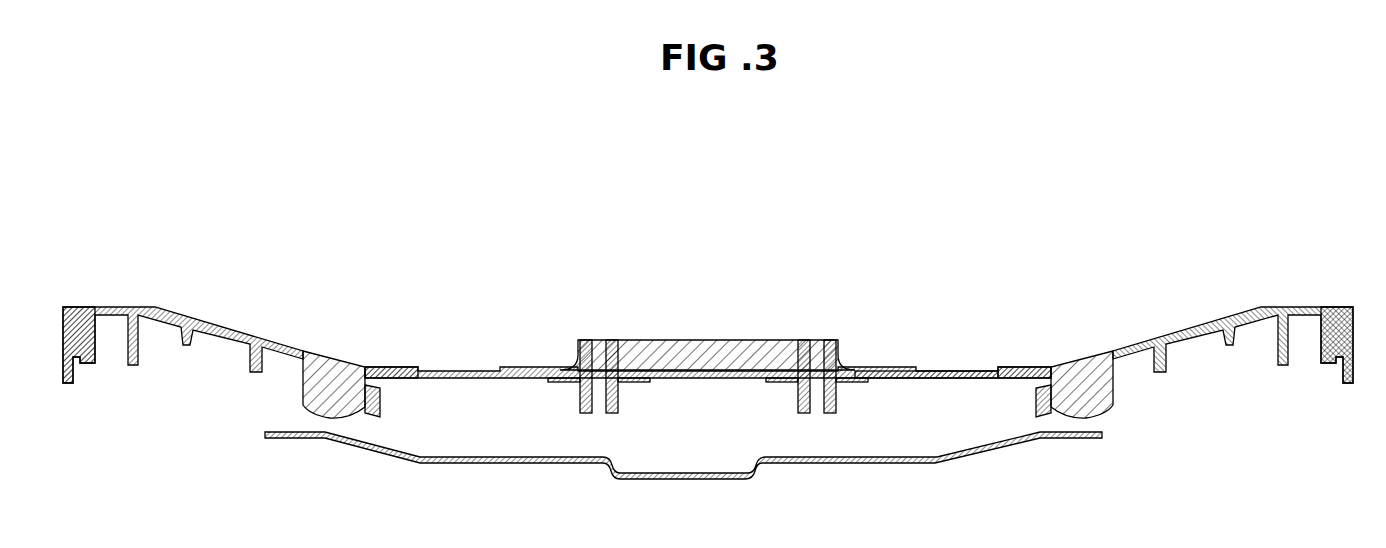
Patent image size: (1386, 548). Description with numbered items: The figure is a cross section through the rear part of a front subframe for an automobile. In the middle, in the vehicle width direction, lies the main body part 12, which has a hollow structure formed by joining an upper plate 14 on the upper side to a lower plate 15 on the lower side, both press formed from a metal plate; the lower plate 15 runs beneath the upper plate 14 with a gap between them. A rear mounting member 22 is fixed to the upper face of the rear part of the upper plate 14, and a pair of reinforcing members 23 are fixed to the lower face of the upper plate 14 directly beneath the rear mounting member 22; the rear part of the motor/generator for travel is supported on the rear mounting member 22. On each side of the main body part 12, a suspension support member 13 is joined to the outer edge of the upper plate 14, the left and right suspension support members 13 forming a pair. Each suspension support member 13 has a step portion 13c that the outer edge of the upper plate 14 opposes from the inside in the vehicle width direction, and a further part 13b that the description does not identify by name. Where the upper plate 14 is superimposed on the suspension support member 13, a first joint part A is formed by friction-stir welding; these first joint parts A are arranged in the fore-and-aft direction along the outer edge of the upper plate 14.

The main body part 12 is at (554, 345).
The suspension support member 13 is at (233, 320).
The frame end portion 13b is at (165, 305).
The step portion 13c is at (383, 388).
The upper plate 14 is at (942, 366).
The lower plate 15 is at (829, 469).
The rear mounting member 22 is at (713, 348).
The reinforcing member 23 is at (583, 394).
The first joint part A is at (390, 368).